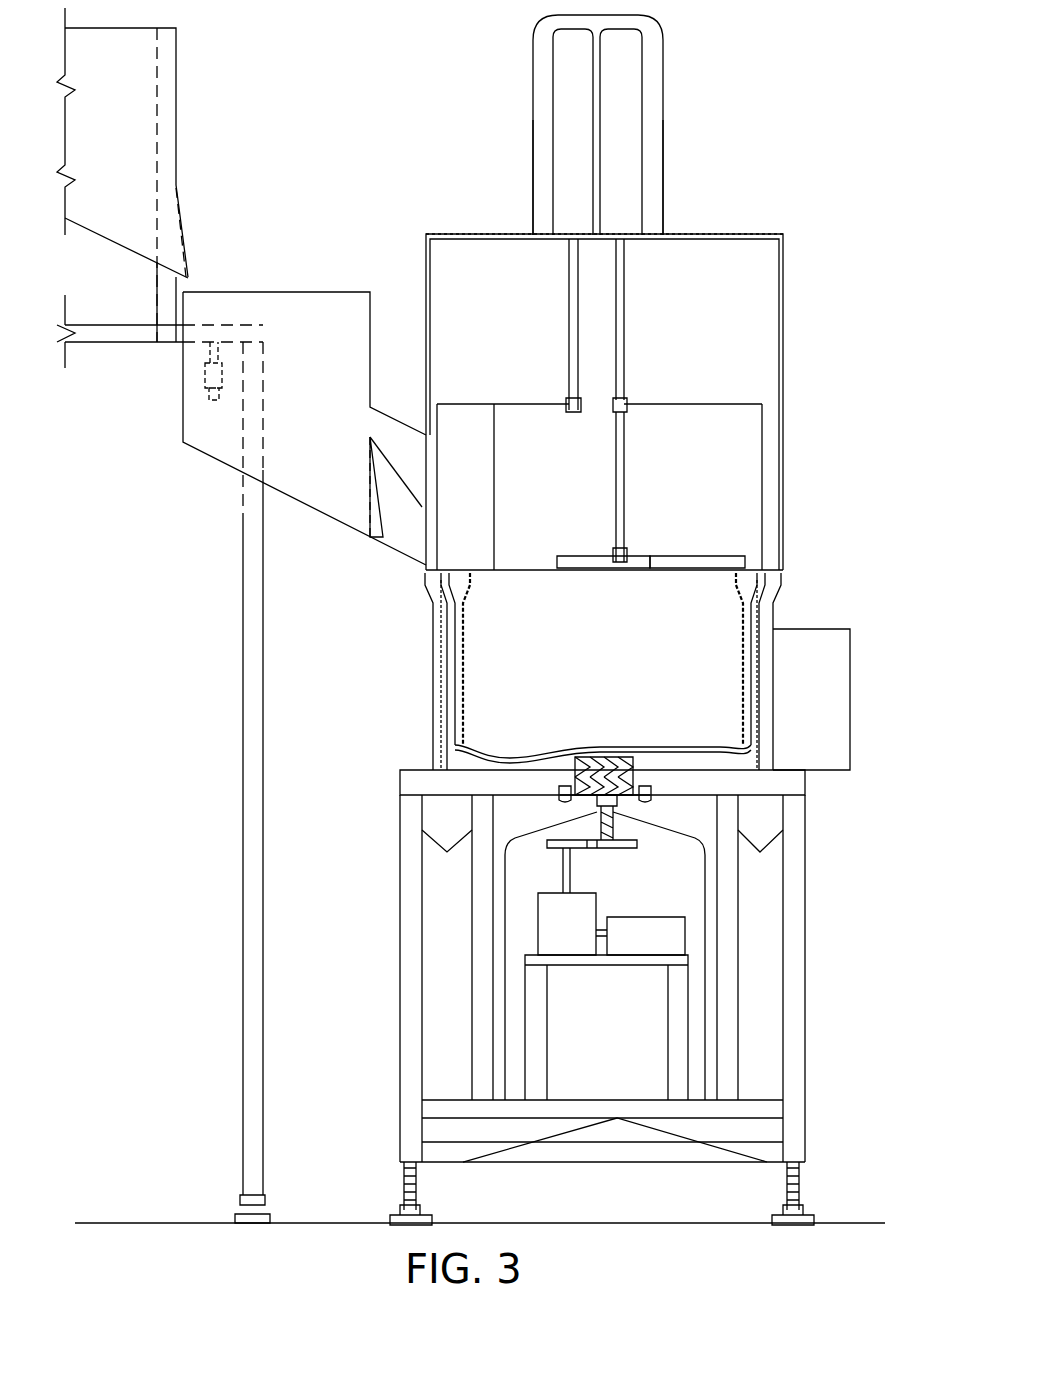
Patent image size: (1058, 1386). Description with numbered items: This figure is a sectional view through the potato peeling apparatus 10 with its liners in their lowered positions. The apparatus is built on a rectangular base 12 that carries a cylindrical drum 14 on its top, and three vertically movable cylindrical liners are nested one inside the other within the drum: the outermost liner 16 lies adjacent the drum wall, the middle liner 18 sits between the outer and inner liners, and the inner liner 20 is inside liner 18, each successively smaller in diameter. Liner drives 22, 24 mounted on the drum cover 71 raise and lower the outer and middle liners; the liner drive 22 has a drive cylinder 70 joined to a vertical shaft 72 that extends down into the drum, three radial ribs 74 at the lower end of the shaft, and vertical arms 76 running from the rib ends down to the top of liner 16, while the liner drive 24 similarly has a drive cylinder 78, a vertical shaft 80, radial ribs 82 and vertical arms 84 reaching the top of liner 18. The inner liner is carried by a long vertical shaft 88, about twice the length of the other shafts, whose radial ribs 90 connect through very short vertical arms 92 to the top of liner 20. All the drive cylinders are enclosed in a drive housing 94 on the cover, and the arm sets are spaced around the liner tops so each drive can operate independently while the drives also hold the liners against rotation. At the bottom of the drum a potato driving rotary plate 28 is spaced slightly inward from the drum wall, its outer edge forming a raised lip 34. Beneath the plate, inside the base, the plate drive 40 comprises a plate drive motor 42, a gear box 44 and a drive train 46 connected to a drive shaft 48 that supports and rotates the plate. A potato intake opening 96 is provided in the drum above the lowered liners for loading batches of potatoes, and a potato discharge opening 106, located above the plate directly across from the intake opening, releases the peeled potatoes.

The potato peeling apparatus 10 is at (798, 158).
The rectangular base 12 is at (814, 944).
The cylindrical drum 14 is at (424, 680).
The outermost liner 16 is at (788, 576).
The middle liner 18 is at (445, 573).
The inner liner 20 is at (745, 632).
The liner drive 22 is at (551, 166).
The liner drive 24 is at (644, 166).
The potato driving rotary plate 28 is at (540, 748).
The raised lip 34 is at (433, 762).
The plate drive 40 is at (619, 892).
The plate drive motor 42 is at (659, 947).
The gear box 44 is at (582, 941).
The drive train 46 is at (583, 849).
The drive shaft 48 is at (613, 812).
The drive cylinder 70 is at (576, 95).
The drum cover 71 is at (690, 236).
The vertical shaft 72 is at (569, 276).
The radial ribs 74 is at (526, 404).
The vertical arms 76 is at (494, 490).
The drive cylinder 78 is at (617, 72).
The vertical shaft 80 is at (624, 296).
The radial ribs 82 is at (736, 405).
The vertical arms 84 is at (760, 470).
The long vertical shaft 88 is at (616, 484).
The radial ribs 90 is at (668, 560).
The short vertical arms 92 is at (557, 560).
The drive housing 94 is at (533, 45).
The potato intake opening 96 is at (413, 560).
The potato discharge opening 106 is at (822, 688).